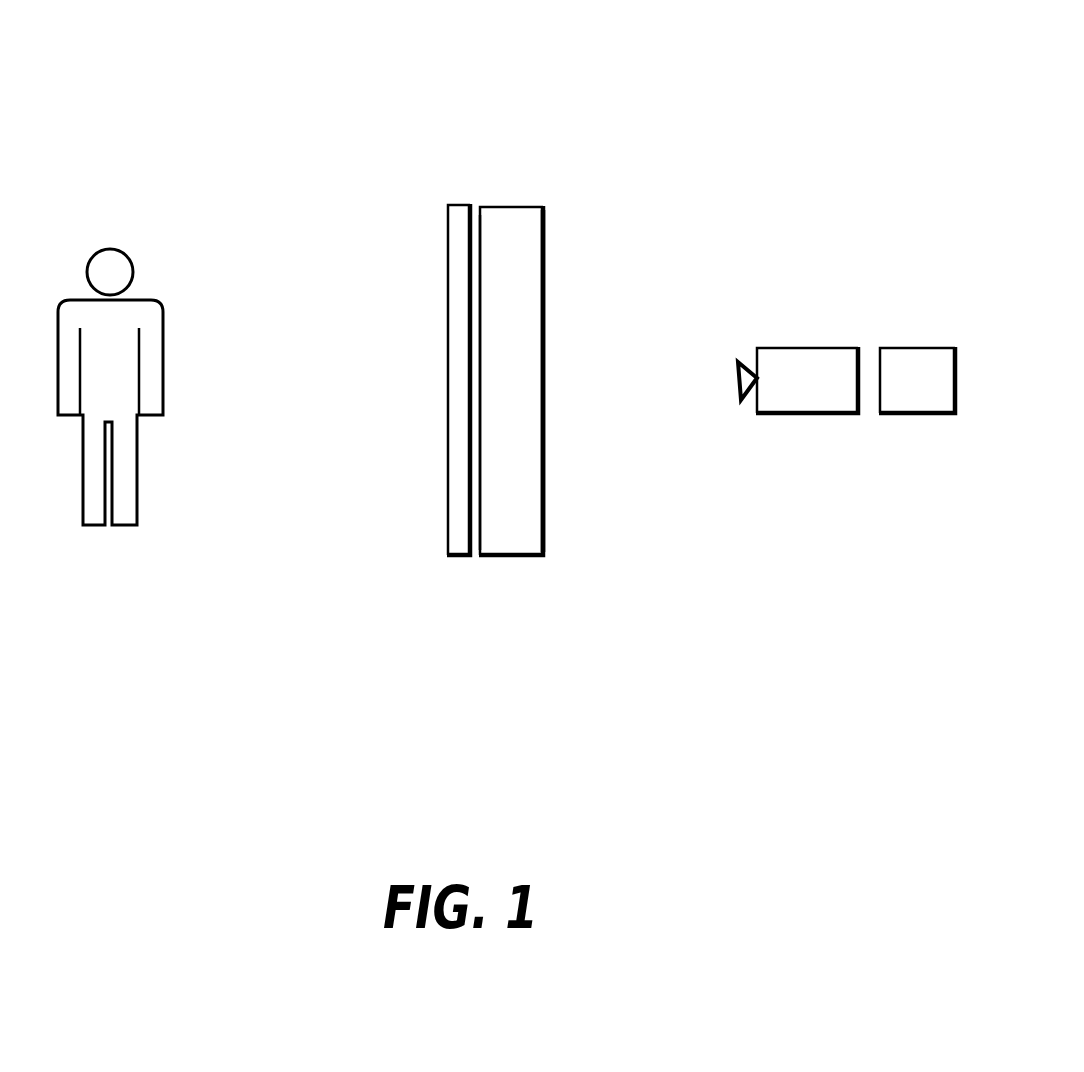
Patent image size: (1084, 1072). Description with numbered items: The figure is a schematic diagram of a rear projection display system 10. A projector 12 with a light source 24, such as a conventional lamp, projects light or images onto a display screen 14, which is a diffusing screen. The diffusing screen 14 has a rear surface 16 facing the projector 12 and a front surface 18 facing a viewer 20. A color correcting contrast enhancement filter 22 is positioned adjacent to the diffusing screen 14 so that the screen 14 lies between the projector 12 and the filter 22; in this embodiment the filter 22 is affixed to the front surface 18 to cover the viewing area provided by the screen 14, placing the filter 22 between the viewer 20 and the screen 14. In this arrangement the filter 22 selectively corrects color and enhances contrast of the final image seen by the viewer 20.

The rear projection display system 10 is at (787, 72).
The projector 12 is at (807, 348).
The display screen 14 is at (508, 557).
The rear surface 16 is at (543, 293).
The front surface 18 is at (478, 212).
The viewer 20 is at (111, 552).
The filter 22 is at (455, 205).
The light source 24 is at (932, 413).